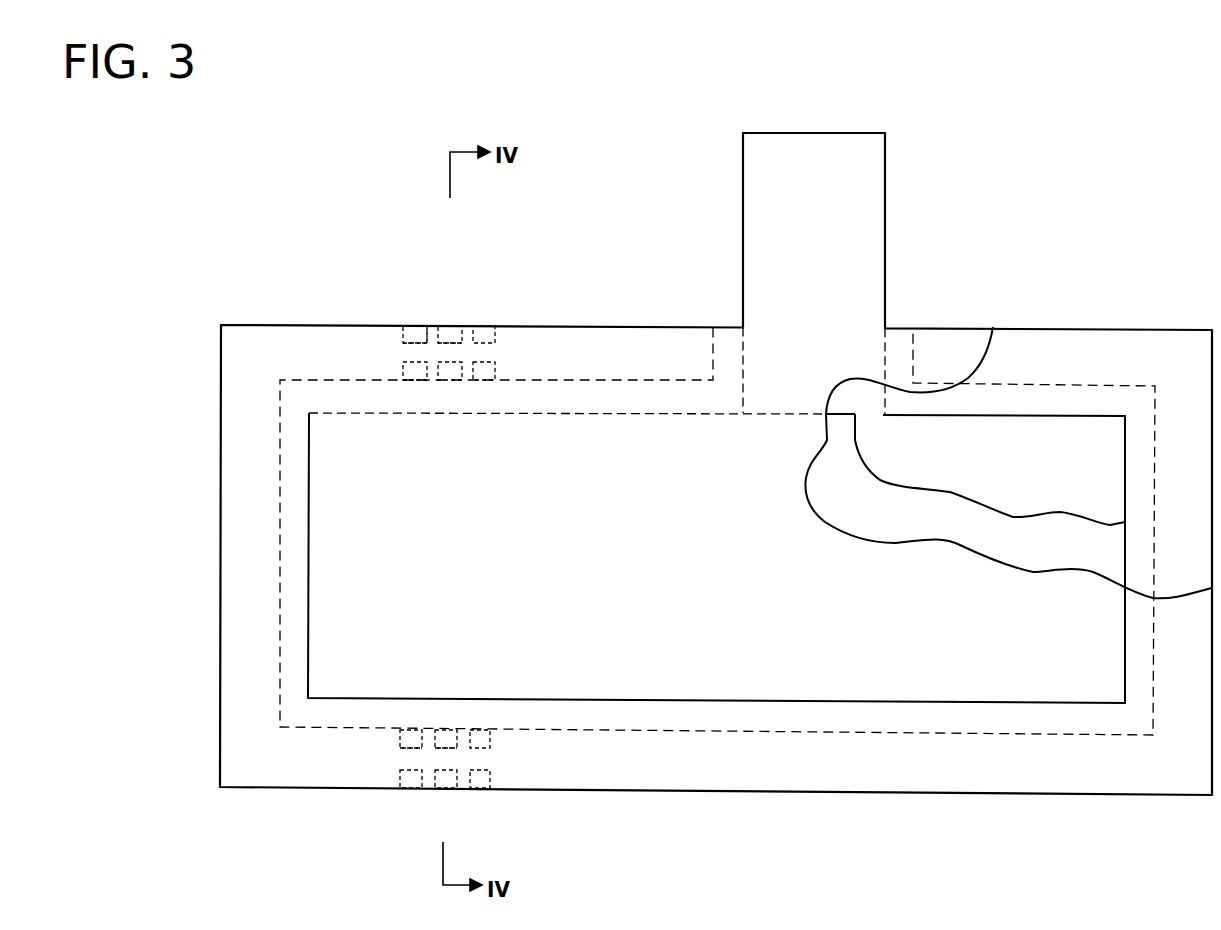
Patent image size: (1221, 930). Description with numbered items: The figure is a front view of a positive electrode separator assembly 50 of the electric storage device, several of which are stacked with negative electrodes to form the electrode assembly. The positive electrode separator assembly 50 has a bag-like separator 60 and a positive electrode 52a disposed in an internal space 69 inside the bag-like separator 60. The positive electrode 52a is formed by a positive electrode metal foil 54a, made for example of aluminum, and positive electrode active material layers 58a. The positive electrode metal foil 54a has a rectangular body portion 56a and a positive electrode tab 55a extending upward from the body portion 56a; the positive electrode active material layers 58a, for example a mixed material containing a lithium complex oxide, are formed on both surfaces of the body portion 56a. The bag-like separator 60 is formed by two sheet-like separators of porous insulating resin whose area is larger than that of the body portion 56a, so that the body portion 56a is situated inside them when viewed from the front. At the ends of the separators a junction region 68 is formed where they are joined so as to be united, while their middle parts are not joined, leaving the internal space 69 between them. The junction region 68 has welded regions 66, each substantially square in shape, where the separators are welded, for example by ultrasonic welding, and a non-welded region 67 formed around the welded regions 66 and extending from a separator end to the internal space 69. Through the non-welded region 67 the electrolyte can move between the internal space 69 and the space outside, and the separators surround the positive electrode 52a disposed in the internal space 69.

The positive electrode separator assembly 50 is at (1020, 137).
The positive electrode 52a is at (1082, 215).
The positive electrode metal foil 54a is at (1015, 192).
The positive electrode tab 55a is at (858, 202).
The body portion 56a is at (928, 440).
The positive electrode active material layers 58a is at (1033, 543).
The bag-like separator 60 is at (268, 213).
The welded regions 66 is at (405, 380).
The non-welded region 67 is at (430, 338).
The junction region 68 is at (330, 198).
The internal space 69 is at (350, 394).